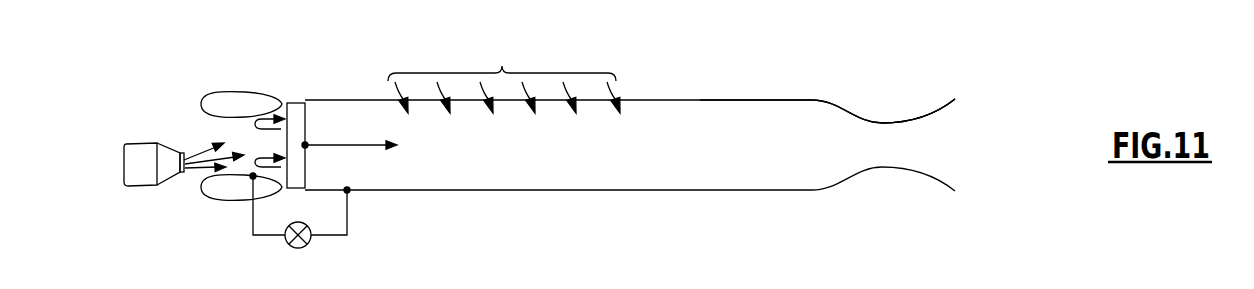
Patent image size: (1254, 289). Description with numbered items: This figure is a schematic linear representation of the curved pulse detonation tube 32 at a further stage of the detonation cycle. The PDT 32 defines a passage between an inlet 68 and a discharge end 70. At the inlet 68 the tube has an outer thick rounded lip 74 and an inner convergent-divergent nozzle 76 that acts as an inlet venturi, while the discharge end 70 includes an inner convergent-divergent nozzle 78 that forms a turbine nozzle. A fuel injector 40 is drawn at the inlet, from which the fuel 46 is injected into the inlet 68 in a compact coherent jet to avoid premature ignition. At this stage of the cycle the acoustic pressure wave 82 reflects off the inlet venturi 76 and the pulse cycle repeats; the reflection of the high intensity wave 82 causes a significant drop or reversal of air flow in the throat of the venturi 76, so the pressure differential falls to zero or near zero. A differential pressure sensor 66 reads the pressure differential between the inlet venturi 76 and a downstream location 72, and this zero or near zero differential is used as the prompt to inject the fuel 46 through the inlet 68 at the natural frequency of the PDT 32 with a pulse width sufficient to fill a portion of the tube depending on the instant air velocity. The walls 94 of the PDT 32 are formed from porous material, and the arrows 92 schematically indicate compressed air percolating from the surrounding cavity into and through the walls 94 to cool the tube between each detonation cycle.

The pulse detonation tube 32 is at (667, 99).
The fuel nozzle 40 is at (137, 177).
The fuel 46 is at (194, 181).
The differential pressure sensor 66 is at (297, 249).
The inlet 68 is at (178, 134).
The discharge end 70 is at (945, 90).
The downstream location 72 is at (356, 206).
The outer thick rounded lip 74 is at (182, 90).
The inner convergent-divergent nozzle 76 is at (213, 124).
The inner convergent-divergent nozzle 78 is at (935, 123).
The acoustic pressure wave 82 is at (296, 108).
The arrows 92 is at (502, 66).
The walls 94 is at (749, 90).